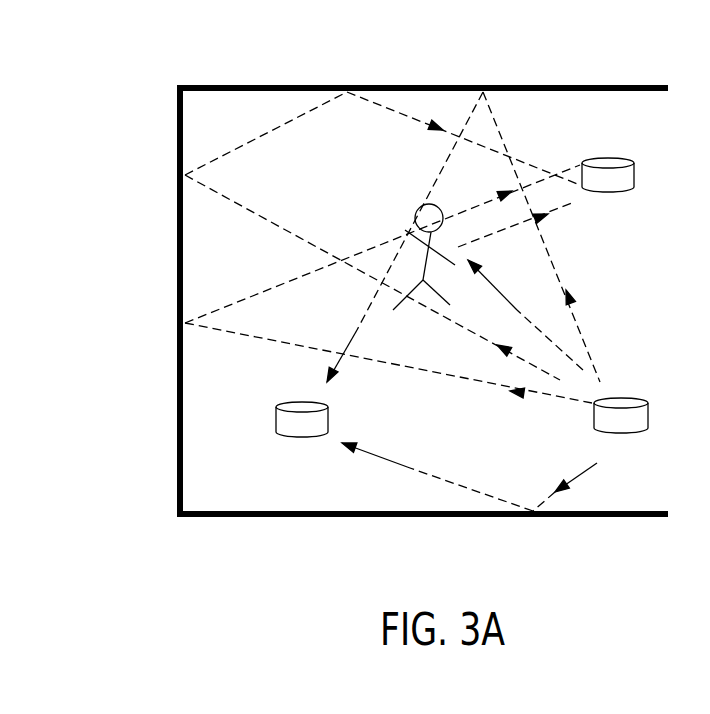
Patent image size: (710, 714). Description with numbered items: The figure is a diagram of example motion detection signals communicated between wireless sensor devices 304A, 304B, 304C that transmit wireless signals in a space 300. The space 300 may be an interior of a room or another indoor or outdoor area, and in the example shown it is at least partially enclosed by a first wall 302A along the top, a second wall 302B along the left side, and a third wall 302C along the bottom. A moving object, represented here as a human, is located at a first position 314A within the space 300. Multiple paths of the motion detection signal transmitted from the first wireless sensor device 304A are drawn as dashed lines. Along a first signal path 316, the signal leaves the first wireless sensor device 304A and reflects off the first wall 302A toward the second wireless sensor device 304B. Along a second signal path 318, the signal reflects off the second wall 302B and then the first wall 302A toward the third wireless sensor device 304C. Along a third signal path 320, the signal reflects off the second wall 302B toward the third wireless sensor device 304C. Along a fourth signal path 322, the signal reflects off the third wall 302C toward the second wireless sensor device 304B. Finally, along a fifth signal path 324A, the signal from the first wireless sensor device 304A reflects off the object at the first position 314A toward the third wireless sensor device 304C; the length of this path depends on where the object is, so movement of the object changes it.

The space 300 is at (385, 302).
The first wall 302A is at (425, 85).
The second wall 302B is at (177, 141).
The third wall 302C is at (615, 518).
The first wireless sensor device 304A is at (621, 398).
The second wireless sensor device 304B is at (330, 418).
The third wireless sensor device 304C is at (634, 177).
The first position 314A is at (415, 212).
The first signal path 316 is at (583, 327).
The second signal path 318 is at (512, 355).
The third signal path 320 is at (537, 397).
The fourth signal path 322 is at (580, 480).
The fifth signal path 324A is at (503, 290).